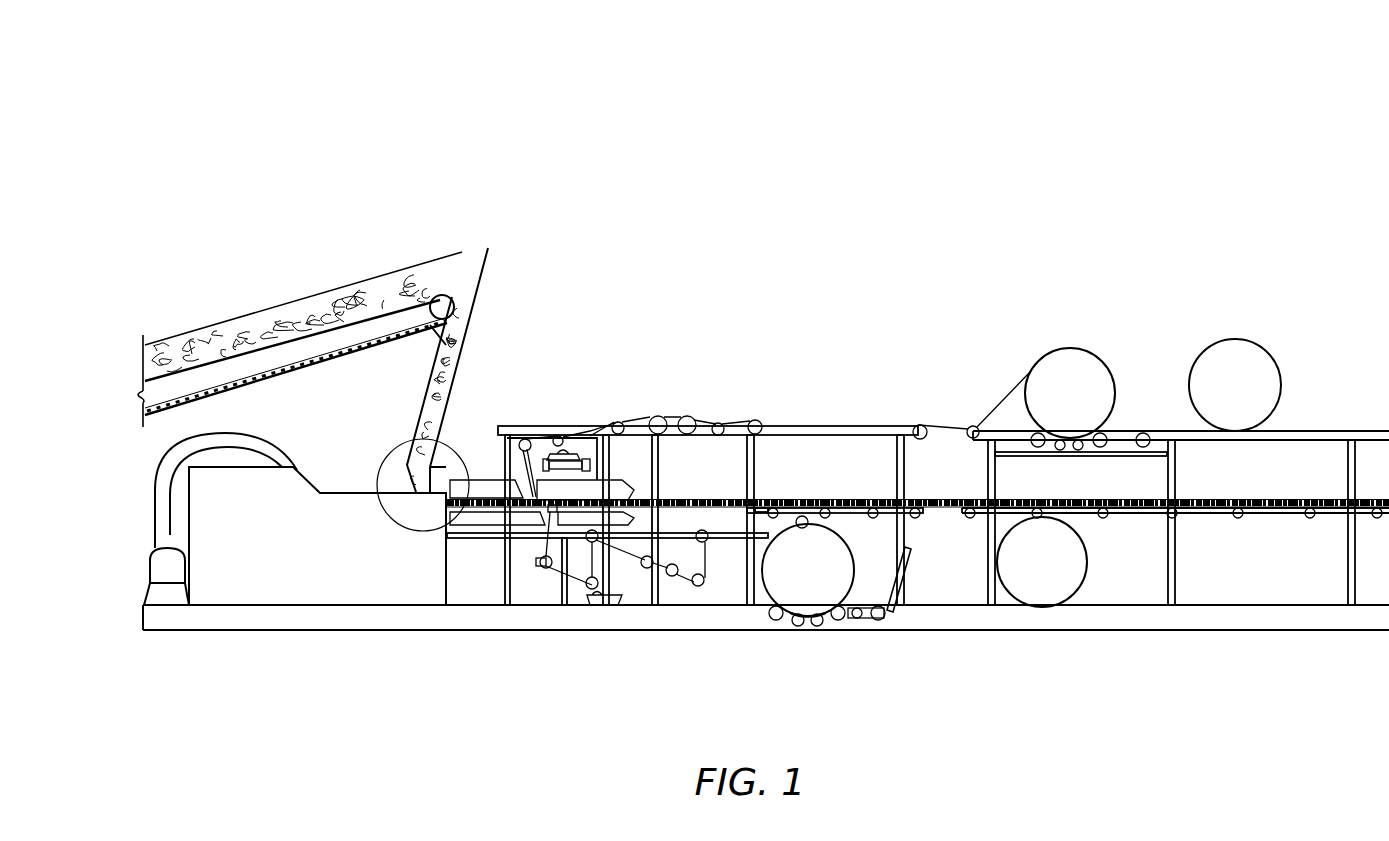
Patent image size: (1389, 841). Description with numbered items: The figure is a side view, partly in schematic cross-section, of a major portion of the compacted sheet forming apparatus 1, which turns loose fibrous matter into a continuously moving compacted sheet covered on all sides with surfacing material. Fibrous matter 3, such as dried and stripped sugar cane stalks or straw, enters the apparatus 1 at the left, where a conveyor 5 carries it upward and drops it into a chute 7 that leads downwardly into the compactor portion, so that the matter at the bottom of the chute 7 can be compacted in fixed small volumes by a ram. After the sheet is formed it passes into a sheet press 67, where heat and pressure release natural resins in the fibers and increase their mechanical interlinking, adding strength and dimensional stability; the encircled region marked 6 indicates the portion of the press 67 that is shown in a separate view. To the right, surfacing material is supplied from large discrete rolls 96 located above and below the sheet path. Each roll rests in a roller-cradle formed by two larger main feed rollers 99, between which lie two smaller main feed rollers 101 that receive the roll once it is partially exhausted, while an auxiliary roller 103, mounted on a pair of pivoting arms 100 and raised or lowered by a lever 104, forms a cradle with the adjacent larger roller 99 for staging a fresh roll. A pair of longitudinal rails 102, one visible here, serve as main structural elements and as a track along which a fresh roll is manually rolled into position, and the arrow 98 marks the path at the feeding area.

The compacted sheet forming apparatus 1 is at (810, 250).
The fibrous matter 3 is at (330, 306).
The conveyor 5 is at (347, 358).
The section view indication 6 is at (385, 449).
The chute 7 is at (440, 393).
The sheet press 67 is at (480, 461).
The rolls 96 is at (1200, 348).
The web path direction 98 is at (808, 636).
The larger main feed rollers 99 is at (850, 610).
The pivoting arms 100 is at (842, 622).
The smaller main feed rollers 101 is at (797, 628).
The longitudinal rails 102 is at (1020, 632).
The auxiliary roller 103 is at (880, 622).
The lever 104 is at (908, 560).